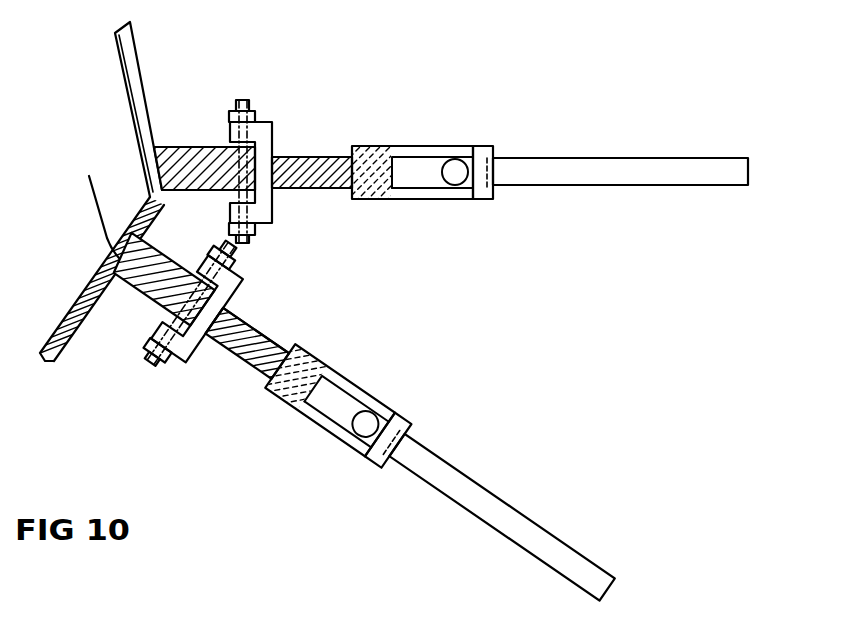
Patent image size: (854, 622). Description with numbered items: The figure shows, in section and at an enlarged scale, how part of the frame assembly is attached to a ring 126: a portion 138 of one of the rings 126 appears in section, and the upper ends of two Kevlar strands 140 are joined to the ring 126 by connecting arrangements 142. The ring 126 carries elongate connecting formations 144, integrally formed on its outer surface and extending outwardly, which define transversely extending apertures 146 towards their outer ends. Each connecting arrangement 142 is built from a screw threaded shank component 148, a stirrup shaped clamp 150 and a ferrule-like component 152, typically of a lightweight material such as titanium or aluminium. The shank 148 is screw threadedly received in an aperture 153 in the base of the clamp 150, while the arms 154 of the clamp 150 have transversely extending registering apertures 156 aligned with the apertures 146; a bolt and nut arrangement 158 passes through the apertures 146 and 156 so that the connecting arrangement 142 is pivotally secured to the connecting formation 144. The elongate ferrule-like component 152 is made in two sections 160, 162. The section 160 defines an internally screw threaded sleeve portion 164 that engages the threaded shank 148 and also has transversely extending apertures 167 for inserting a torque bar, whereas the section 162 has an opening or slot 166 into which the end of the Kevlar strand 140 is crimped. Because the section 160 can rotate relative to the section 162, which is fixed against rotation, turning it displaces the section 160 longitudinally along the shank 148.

The ring 126 is at (118, 52).
The portion of ring 138 is at (116, 111).
The Kevlar strands 140 is at (631, 168).
The connecting arrangements 142 is at (336, 142).
The connecting formations 144 is at (180, 165).
The apertures 146 is at (181, 291).
The screw threaded shank component 148 is at (341, 189).
The stirrup shaped clamp 150 is at (256, 142).
The ferrule-like component 152 is at (462, 202).
The apertures 153 is at (269, 166).
The arms 154 is at (265, 122).
The registering apertures 156 is at (230, 132).
The bolt and nut arrangements 158 is at (238, 100).
The section 160 is at (418, 163).
The section 162 is at (495, 144).
The internally screw threaded sleeve portion 164 is at (403, 193).
The opening or slot 166 is at (501, 192).
The apertures 167 is at (452, 166).